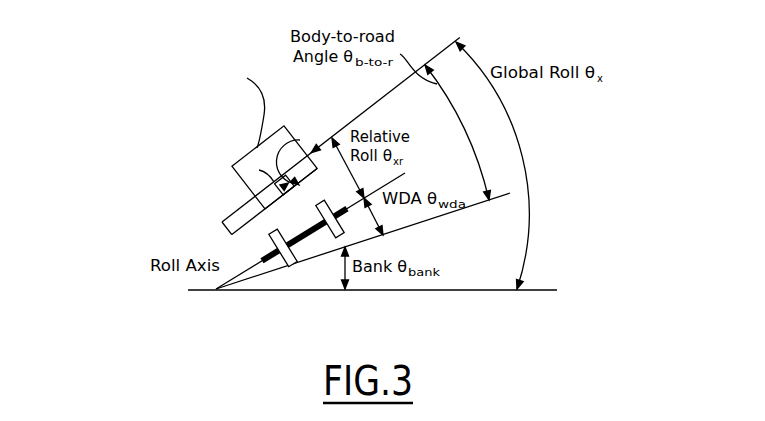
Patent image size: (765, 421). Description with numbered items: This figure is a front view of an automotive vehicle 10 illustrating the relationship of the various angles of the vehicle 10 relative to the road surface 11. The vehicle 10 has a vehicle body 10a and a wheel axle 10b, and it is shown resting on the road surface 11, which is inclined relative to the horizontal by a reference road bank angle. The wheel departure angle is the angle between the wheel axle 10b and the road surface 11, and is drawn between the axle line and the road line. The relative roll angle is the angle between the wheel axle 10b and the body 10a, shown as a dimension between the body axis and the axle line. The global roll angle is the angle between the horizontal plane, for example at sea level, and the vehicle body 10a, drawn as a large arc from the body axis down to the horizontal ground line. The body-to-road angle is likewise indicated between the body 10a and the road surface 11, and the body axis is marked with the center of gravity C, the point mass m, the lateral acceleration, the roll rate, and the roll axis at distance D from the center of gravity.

The vehicle 10 is at (170, 182).
The vehicle body 10a is at (234, 162).
The wheel axle 10b is at (322, 205).
The road surface 11 is at (438, 217).